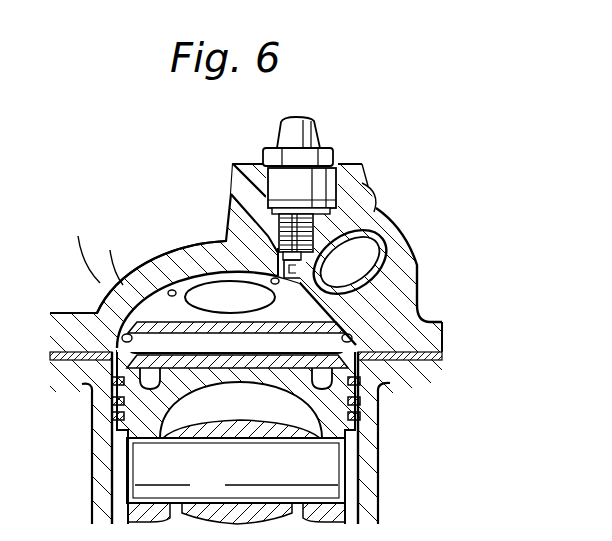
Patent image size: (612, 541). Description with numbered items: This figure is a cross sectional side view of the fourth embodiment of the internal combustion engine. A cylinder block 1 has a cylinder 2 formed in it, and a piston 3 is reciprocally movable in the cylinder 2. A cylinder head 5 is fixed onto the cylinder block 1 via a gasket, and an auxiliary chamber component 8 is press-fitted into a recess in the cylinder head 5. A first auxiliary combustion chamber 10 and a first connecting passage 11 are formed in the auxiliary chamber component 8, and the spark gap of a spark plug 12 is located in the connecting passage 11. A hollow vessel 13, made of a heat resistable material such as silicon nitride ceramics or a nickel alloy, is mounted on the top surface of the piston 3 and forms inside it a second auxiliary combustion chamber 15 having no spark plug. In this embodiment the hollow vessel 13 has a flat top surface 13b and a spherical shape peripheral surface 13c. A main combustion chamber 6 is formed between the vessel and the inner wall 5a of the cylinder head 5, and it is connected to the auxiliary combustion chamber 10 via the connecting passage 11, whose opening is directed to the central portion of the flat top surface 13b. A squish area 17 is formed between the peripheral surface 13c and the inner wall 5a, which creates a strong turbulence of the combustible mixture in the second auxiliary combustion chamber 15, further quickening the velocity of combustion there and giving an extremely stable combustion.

The cylinder block 1 is at (376, 437).
The cylinder 2 is at (356, 476).
The piston 3 is at (382, 392).
The cylinder head 5 is at (419, 272).
The inner wall of the cylinder head 5a is at (165, 290).
The main combustion chamber 6 is at (301, 312).
The auxiliary chamber component 8 is at (381, 214).
The first auxiliary combustion chamber 10 is at (368, 277).
The first connecting passage 11 is at (250, 250).
The spark plug 12 is at (312, 138).
The hollow vessel 13 is at (84, 383).
The flat top surface 13b is at (121, 255).
The spherical shape peripheral surface 13c is at (84, 246).
The second auxiliary combustion chamber 15 is at (227, 340).
The squish area 17 is at (76, 306).